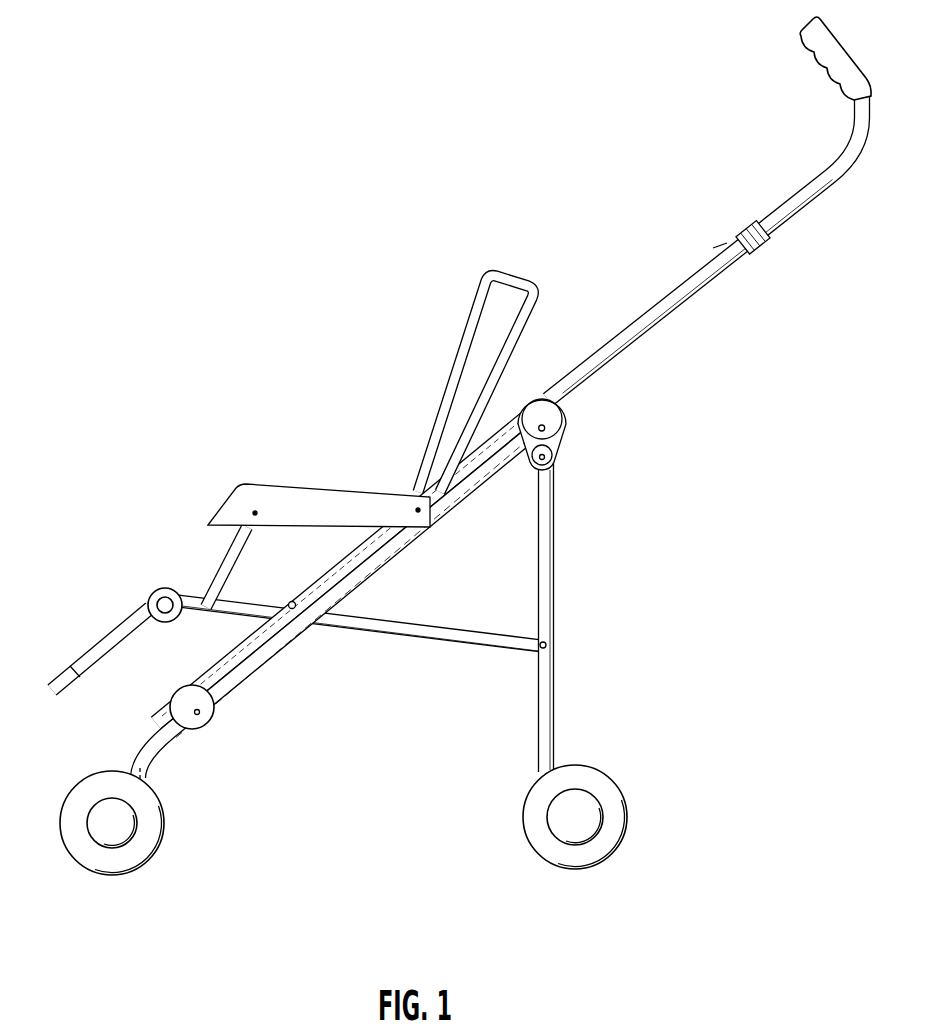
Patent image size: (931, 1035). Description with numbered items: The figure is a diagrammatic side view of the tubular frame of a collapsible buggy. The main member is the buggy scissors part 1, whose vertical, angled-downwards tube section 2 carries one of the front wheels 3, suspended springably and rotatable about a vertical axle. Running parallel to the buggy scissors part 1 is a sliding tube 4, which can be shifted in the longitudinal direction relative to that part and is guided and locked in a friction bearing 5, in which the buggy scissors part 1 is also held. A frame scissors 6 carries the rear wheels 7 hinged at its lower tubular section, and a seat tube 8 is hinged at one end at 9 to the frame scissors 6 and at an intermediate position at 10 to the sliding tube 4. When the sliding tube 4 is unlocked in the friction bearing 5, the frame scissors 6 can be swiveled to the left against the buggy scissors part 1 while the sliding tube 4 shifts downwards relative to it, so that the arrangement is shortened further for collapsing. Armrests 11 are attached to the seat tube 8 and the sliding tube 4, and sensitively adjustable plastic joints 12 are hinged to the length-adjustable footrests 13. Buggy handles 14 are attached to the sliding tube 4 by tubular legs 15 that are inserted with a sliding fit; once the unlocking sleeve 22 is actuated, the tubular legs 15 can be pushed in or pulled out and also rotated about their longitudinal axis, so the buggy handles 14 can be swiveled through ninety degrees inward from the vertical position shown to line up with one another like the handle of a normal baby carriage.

The buggy scissors part 1 is at (267, 662).
The vertical, angled-downwards tube section 2 is at (140, 790).
The front wheel 3 is at (153, 842).
The sliding tube 4 is at (348, 552).
The friction bearing 5 is at (557, 442).
The frame scissors 6 is at (545, 715).
The rear wheel 7 is at (610, 808).
The seat tube 8 is at (458, 635).
The hinge of seat tube to frame scissors 9 is at (548, 643).
The hinge of seat tube to sliding tube 10 is at (290, 603).
The armrest 11 is at (274, 496).
The plastic joint 12 is at (158, 590).
The footrest 13 is at (88, 636).
The buggy handle 14 is at (812, 66).
The tubular leg 15 is at (811, 200).
The unlocking sleeve 22 is at (762, 242).